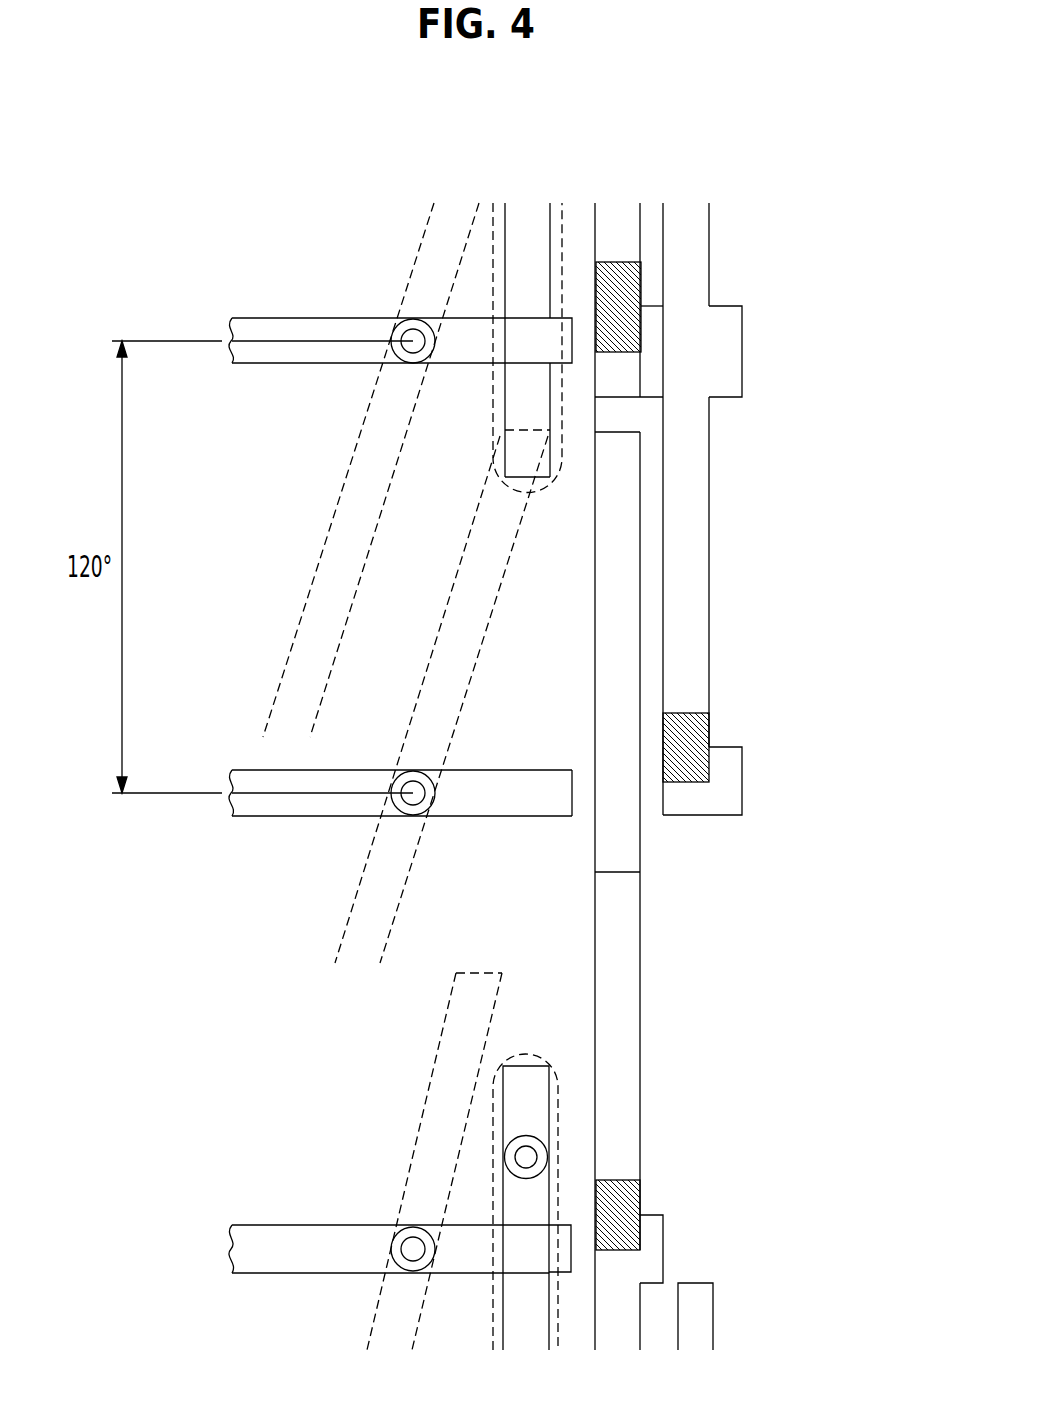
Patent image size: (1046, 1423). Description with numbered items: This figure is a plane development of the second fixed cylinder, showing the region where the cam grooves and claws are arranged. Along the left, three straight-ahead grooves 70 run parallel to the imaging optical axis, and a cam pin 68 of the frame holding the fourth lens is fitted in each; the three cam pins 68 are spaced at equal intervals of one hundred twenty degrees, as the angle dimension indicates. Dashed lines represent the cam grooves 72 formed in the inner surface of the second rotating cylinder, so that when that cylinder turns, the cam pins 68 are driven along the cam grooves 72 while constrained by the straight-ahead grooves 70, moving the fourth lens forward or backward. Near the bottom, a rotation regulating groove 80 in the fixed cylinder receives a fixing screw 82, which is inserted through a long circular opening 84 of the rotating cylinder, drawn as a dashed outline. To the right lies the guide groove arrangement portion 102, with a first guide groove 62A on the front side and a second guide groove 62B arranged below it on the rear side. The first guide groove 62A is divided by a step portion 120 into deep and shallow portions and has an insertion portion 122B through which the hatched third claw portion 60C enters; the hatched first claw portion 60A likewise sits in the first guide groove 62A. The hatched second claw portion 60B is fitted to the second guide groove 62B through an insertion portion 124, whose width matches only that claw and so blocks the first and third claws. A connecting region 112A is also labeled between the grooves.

The guide groove arrangement portion 102 is at (400, 167).
The first guide groove 62A is at (615, 212).
The second guide groove 62B is at (695, 297).
The first claw portion 60A is at (641, 268).
The second claw portion 60B is at (712, 725).
The third claw portion 60C is at (641, 1197).
The connecting portion 112A is at (647, 375).
The insertion portion 124 is at (727, 795).
The step portion 120 is at (615, 873).
The insertion portion 122B is at (653, 1245).
The straight-ahead groove 70 is at (292, 330).
The cam pin 68 is at (395, 352).
The cam groove 72 is at (438, 247).
The rotation regulating groove 80 is at (538, 1087).
The fixing screw 82 is at (532, 1157).
The long circular opening 84 is at (525, 1050).